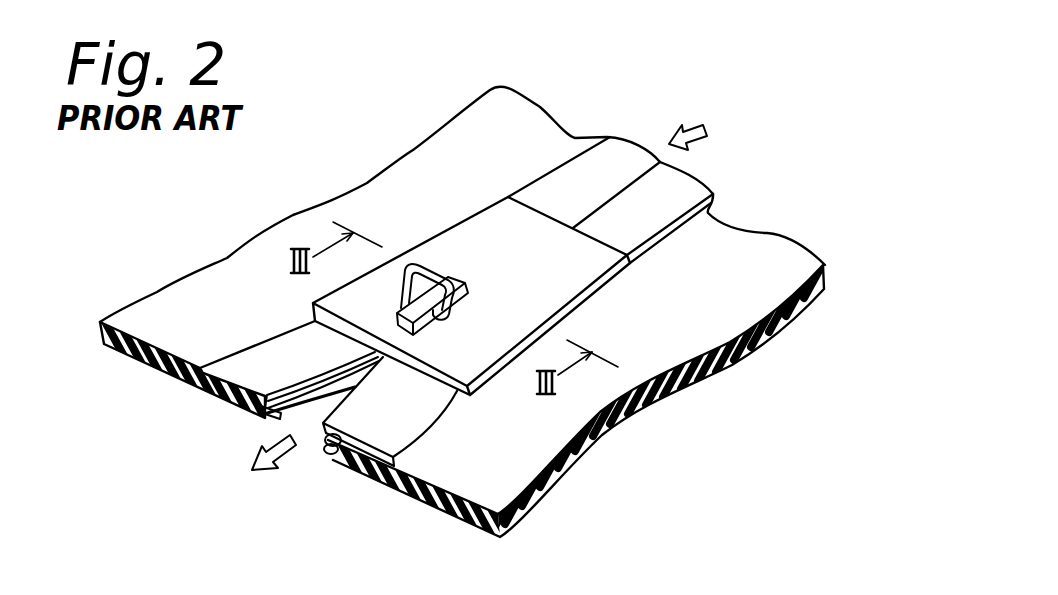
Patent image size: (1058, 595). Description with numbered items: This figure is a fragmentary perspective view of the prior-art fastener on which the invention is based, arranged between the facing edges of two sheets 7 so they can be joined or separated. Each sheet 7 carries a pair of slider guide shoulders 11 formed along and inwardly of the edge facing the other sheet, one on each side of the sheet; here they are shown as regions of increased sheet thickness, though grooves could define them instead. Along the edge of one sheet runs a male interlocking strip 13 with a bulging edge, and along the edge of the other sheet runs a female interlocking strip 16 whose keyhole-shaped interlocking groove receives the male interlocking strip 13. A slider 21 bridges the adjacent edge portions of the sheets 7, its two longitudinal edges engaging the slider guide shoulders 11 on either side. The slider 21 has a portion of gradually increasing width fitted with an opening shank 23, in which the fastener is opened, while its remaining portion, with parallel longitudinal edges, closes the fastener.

The sheet 7 is at (437, 162).
The slider guide shoulder 11 is at (574, 152).
The male interlocking strip 13 is at (263, 421).
The female interlocking strip 16 is at (330, 450).
The slider 21 is at (503, 217).
The opening shank 23 is at (383, 356).